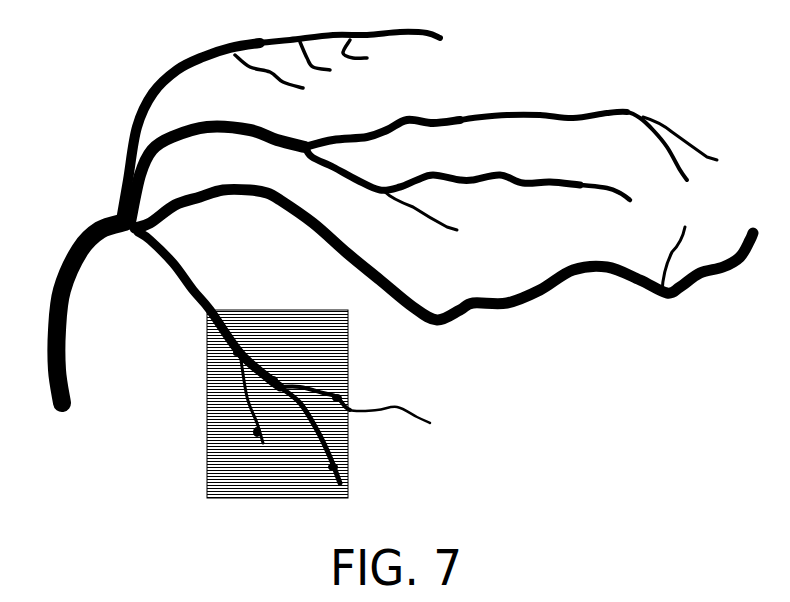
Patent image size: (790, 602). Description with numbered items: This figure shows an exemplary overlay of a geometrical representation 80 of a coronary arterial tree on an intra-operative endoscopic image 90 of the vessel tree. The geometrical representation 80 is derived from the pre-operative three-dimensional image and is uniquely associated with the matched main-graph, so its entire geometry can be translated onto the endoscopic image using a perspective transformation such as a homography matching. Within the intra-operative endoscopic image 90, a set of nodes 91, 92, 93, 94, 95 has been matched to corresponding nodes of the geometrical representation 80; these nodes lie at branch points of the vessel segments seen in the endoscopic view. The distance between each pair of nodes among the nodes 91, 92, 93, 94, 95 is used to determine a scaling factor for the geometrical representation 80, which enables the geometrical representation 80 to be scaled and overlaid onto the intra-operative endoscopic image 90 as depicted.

The geometrical representation 80 is at (104, 82).
The intra-operative endoscopic image 90 is at (267, 299).
The node 91 is at (236, 353).
The node 92 is at (254, 433).
The node 93 is at (276, 381).
The node 94 is at (339, 400).
The node 95 is at (335, 467).